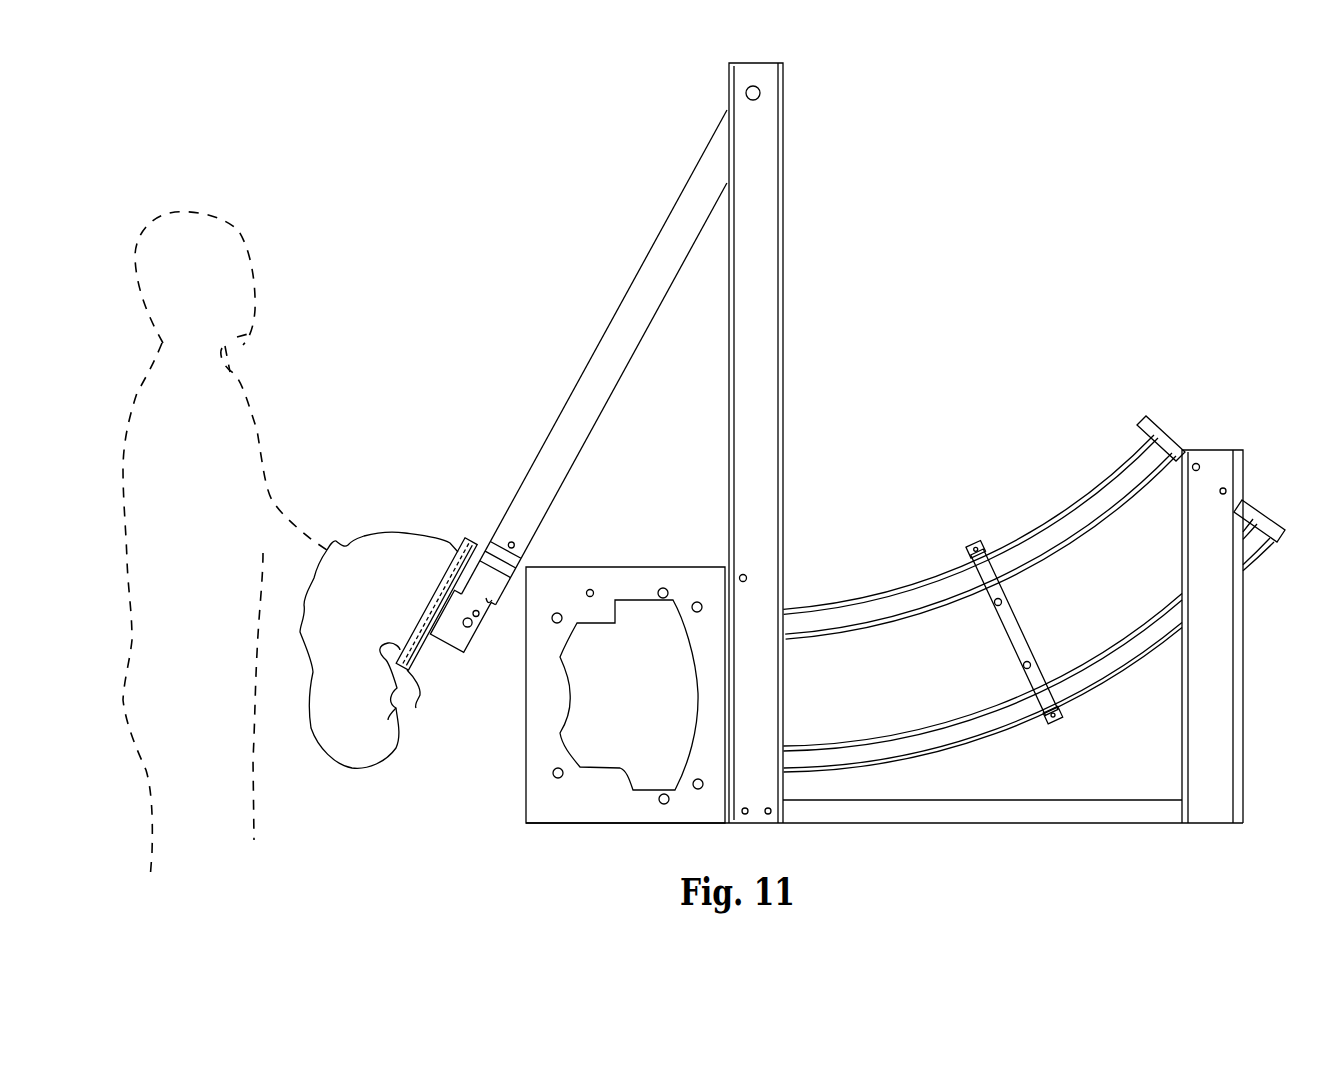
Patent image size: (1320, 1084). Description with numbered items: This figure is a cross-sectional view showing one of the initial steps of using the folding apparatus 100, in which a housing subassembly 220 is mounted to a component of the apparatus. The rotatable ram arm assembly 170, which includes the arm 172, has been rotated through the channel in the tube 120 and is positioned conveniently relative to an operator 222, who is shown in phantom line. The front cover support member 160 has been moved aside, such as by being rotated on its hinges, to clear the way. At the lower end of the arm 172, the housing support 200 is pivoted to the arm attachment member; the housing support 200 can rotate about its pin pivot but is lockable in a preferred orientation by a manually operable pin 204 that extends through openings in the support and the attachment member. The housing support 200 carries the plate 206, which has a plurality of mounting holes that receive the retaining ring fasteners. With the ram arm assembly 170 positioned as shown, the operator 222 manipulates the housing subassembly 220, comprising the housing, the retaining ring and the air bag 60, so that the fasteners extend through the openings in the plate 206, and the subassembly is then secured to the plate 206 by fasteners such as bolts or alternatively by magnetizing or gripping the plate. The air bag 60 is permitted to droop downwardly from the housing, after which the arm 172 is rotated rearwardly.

The air bag 60 is at (354, 548).
The folding apparatus 100 is at (786, 358).
The tube 120 is at (873, 597).
The front cover support member 160 is at (582, 565).
The ram arm assembly 170 is at (522, 457).
The arm 172 is at (600, 355).
The housing support 200 is at (466, 655).
The manually operable pin 204 is at (476, 614).
The plate 206 is at (421, 695).
The housing subassembly 220 is at (446, 534).
The operator 222 is at (232, 370).